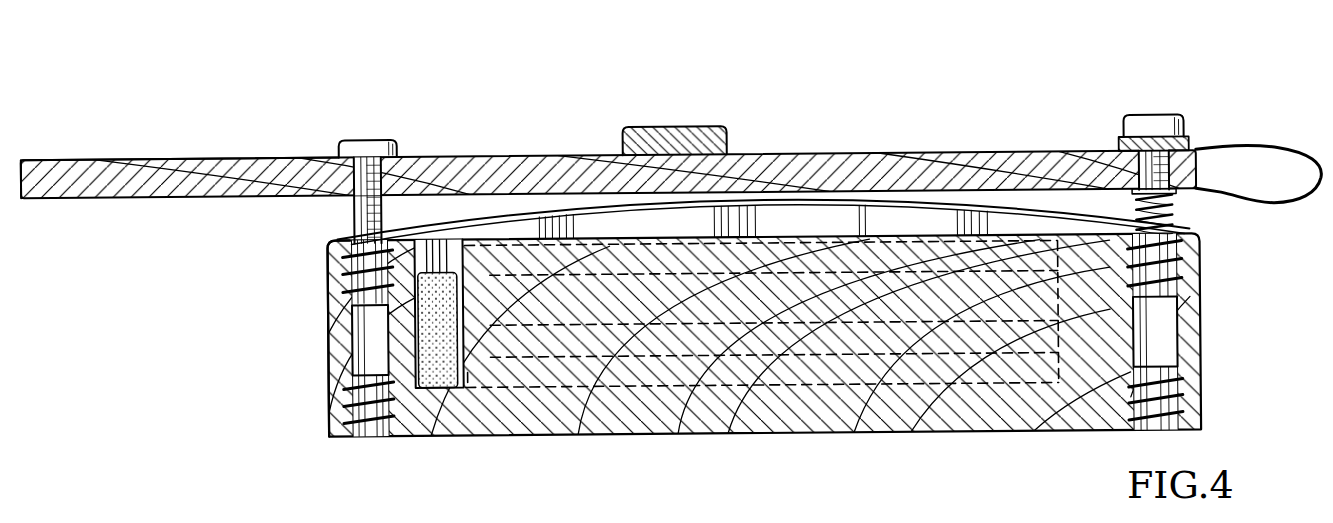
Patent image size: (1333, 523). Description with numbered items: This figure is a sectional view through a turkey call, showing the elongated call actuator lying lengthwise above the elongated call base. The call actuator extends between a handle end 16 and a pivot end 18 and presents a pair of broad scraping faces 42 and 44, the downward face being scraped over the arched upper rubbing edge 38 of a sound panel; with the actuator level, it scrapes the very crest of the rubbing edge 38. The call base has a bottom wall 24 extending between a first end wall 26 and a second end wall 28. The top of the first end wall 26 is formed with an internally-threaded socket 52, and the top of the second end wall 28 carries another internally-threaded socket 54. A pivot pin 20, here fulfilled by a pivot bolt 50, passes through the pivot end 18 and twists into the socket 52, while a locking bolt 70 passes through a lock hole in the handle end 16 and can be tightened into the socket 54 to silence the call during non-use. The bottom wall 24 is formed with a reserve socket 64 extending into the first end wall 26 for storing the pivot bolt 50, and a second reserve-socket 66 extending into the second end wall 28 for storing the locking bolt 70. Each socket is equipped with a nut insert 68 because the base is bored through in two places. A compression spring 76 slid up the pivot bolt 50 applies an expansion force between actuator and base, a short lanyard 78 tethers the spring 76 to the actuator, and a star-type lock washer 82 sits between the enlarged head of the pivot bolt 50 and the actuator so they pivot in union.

The handle end 16 is at (162, 157).
The pivot end 18 is at (1028, 152).
The pivot pin 20 is at (1168, 106).
The pivot bolt 50 is at (1148, 116).
The bottom wall 24 is at (708, 440).
The first end wall 26 is at (1205, 327).
The second end wall 28 is at (320, 346).
The upper rubbing edge 38 is at (568, 210).
The scraping face 42 is at (505, 196).
The scraping face 44 is at (667, 120).
The internally-threaded socket 52 is at (1181, 268).
The internally-threaded socket 54 is at (348, 270).
The reserve internally-threaded socket 64 is at (1182, 395).
The second reserve-socket 66 is at (410, 431).
The nut insert 68 is at (369, 438).
The locking bolt 70 is at (363, 140).
The compression spring 76 is at (1175, 210).
The lanyard 78 is at (1275, 146).
The star-type lock washer 82 is at (1190, 140).